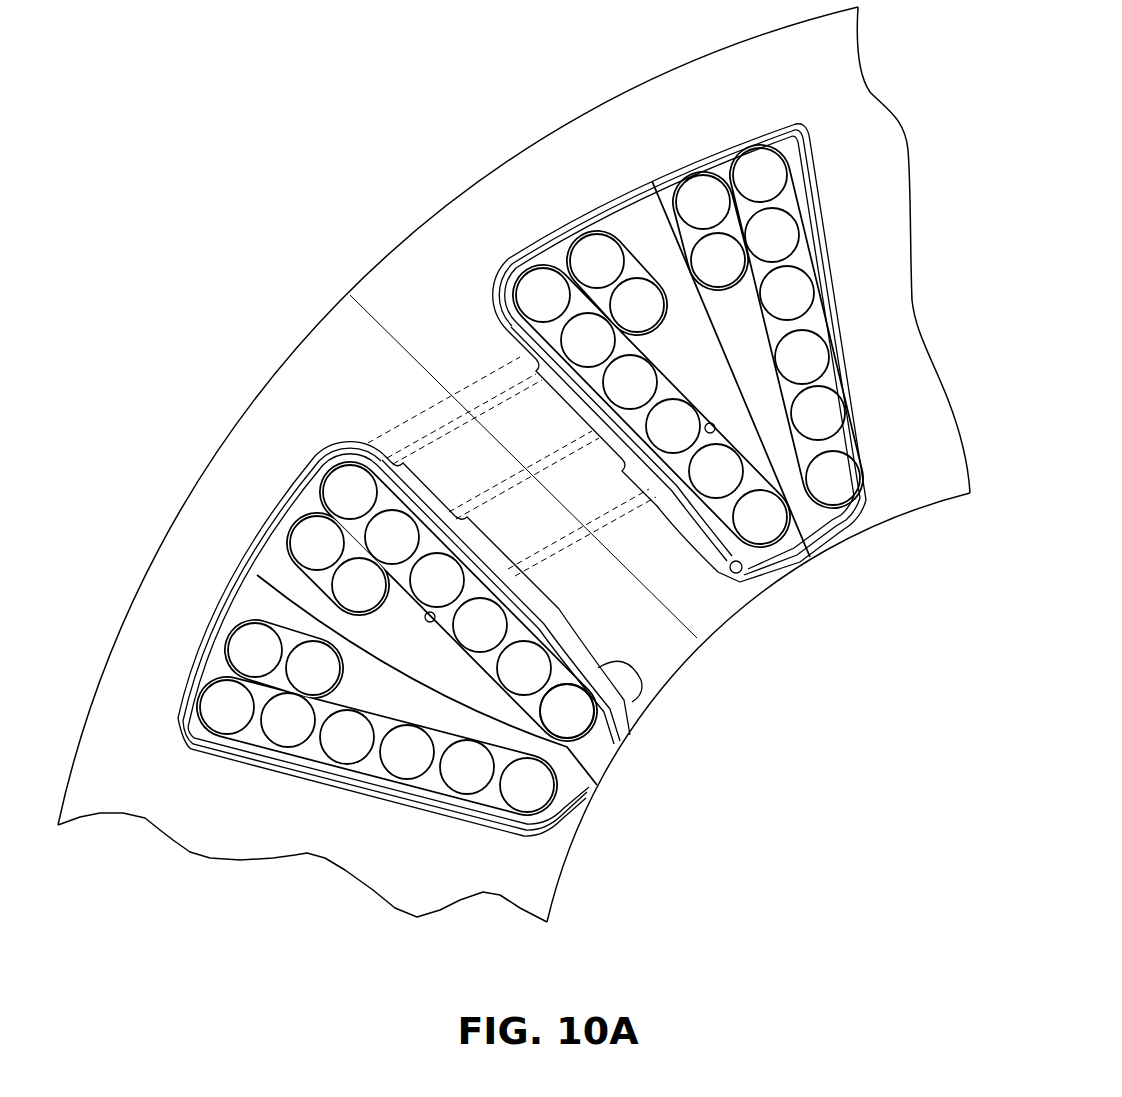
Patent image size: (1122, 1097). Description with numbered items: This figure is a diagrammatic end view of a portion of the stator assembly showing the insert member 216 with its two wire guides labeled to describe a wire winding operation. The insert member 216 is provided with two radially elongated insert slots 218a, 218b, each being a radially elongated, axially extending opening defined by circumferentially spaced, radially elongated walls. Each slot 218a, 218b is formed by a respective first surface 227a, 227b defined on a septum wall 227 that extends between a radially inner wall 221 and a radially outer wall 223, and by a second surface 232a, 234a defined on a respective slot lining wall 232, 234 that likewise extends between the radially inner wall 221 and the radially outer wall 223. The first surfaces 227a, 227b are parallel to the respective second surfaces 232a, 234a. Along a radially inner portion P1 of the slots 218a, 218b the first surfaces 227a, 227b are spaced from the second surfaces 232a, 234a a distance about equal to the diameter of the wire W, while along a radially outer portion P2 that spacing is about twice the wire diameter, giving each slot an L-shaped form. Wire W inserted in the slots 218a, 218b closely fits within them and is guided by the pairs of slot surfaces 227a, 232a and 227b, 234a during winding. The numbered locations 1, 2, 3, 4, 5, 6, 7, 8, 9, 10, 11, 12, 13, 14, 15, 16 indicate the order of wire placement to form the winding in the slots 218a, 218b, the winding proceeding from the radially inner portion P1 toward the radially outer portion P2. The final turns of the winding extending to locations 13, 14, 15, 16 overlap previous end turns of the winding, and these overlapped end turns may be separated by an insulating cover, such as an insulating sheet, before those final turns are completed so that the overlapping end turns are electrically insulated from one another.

The insert member 216 is at (630, 175).
The insert slot 218a is at (558, 262).
The insert slot 218b is at (320, 508).
The radially inner wall 221 is at (828, 528).
The radially outer wall 223 is at (684, 166).
The septum wall 227 is at (750, 443).
The first surface 227a is at (702, 432).
The first surface 227b is at (470, 642).
The slot lining wall 232 is at (741, 574).
The second surface 232a is at (718, 426).
The slot lining wall 234 is at (604, 663).
The second surface 234a is at (427, 620).
The wire W is at (583, 722).
The radially inner portion P1 is at (552, 503).
The radially outer portion P2 is at (455, 413).
The numbered location 1 is at (567, 711).
The numbered location 2 is at (760, 517).
The numbered location 3 is at (524, 668).
The numbered location 4 is at (716, 471).
The numbered location 5 is at (480, 625).
The numbered location 6 is at (673, 426).
The numbered location 7 is at (437, 580).
The numbered location 8 is at (630, 382).
The numbered location 9 is at (392, 537).
The numbered location 10 is at (588, 340).
The numbered location 11 is at (350, 492).
The numbered location 12 is at (543, 295).
The numbered location 13 is at (317, 543).
The numbered location 14 is at (597, 261).
The numbered location 15 is at (359, 585).
The numbered location 16 is at (637, 305).